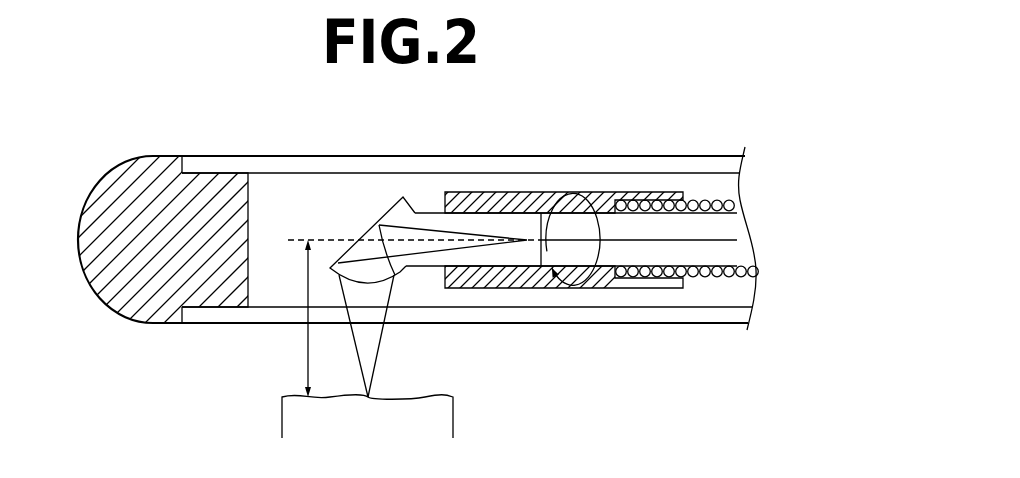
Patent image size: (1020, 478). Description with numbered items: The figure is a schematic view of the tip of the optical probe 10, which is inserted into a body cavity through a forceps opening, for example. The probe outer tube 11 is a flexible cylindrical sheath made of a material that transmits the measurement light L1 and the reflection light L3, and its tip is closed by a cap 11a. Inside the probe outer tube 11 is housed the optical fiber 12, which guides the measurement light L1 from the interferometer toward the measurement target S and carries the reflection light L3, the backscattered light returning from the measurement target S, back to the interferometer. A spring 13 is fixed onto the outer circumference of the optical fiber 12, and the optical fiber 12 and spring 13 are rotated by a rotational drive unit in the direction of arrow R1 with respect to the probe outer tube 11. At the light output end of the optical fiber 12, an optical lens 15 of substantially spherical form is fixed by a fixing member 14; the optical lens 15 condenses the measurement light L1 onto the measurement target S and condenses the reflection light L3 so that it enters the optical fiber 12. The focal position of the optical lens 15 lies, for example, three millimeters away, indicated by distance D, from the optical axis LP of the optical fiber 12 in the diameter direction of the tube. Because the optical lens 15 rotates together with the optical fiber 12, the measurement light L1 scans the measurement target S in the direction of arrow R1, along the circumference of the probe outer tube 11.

The optical probe 10 is at (625, 113).
The probe outer tube 11 is at (478, 165).
The cap 11a is at (167, 166).
The optical fiber 12 is at (655, 255).
The spring 13 is at (720, 278).
The fixing member 14 is at (525, 196).
The optical lens 15 is at (413, 197).
The direction of arrow R1 is at (589, 239).
The optical axis LP is at (397, 241).
The measurement light L1 is at (390, 340).
The reflection light L3 is at (347, 342).
The distance D is at (298, 318).
The measurement target S is at (447, 417).